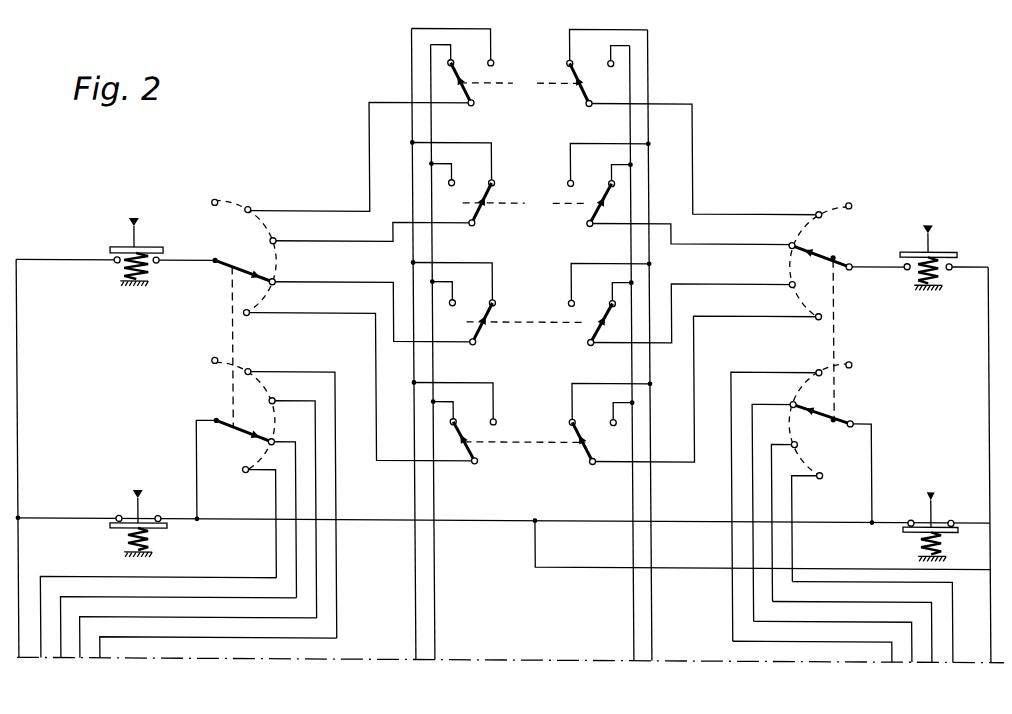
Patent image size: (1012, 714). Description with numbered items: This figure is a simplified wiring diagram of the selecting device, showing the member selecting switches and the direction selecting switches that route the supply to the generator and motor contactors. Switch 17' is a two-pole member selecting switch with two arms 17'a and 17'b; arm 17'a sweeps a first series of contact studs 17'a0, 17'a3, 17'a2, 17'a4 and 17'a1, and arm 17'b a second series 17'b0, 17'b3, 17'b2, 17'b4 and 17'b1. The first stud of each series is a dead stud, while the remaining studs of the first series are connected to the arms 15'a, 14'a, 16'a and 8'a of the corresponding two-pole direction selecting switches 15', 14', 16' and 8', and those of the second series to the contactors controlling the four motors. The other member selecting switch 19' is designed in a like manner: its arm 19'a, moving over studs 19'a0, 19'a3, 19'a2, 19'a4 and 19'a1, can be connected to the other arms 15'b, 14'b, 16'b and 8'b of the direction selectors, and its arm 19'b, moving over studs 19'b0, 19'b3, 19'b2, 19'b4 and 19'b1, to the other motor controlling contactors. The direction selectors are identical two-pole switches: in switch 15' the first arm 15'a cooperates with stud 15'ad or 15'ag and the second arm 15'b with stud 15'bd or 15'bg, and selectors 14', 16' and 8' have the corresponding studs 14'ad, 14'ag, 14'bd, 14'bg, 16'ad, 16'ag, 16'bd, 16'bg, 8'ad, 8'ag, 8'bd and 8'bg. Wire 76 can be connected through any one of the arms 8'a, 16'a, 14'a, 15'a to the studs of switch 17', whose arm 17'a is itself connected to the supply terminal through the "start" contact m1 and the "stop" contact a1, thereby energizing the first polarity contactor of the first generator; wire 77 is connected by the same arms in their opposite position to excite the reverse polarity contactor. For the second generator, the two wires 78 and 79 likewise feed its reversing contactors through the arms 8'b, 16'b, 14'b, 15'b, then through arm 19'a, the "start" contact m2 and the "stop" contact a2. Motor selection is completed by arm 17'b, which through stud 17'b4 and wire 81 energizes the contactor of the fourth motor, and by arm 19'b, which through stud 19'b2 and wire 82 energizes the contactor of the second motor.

The contact stud 15'ad is at (458, 55).
The contact stud 15'ag is at (470, 48).
The contact stud 15'bd is at (596, 48).
The contact stud 15'bg is at (606, 55).
The first arm of direction selecting switch 15'a is at (370, 137).
The second arm of direction selecting switch 15'b is at (694, 138).
The direction selecting switch 15' is at (521, 78).
The contact stud 14'ad is at (458, 173).
The contact stud 14'ag is at (469, 163).
The contact stud 14'bd is at (598, 164).
The contact stud 14'bg is at (608, 174).
The first arm of direction selecting switch 14'a is at (389, 212).
The second arm of direction selecting switch 14'b is at (680, 213).
The direction selecting switch 14' is at (523, 198).
The contact stud 16'ad is at (459, 292).
The contact stud 16'ag is at (471, 283).
The contact stud 16'bd is at (610, 284).
The contact stud 16'bg is at (627, 293).
The first arm of direction selecting switch 16'a is at (390, 313).
The second arm of direction selecting switch 16'b is at (689, 314).
The direction selecting switch 16' is at (526, 316).
The contact stud 8'ad is at (457, 412).
The contact stud 8'ag is at (469, 402).
The contact stud 8'bd is at (602, 403).
The contact stud 8'bg is at (612, 413).
The first arm of direction selecting switch 8'a is at (369, 388).
The second arm of direction selecting switch 8'b is at (696, 390).
The direction selecting switch 8' is at (524, 436).
The start contact m1 is at (115, 251).
The start contact m2 is at (920, 258).
The stop contact a1 is at (138, 523).
The stop contact a2 is at (930, 526).
The arm of member selecting switch 17'a is at (244, 256).
The dead stud 17'a0 is at (216, 194).
The contact stud 17'a1 is at (267, 307).
The contact stud 17'a2 is at (291, 234).
The contact stud 17'a3 is at (265, 203).
The contact stud 17'a4 is at (291, 275).
The member selecting switch 17' is at (243, 347).
The arm of member selecting switch 17'b is at (234, 441).
The dead stud 17'b0 is at (207, 355).
The contact stud 17'b1 is at (269, 518).
The contact stud 17'b2 is at (293, 502).
The contact stud 17'b3 is at (291, 497).
The contact stud 17'b4 is at (291, 512).
The arm of member selecting switch 19'a is at (820, 262).
The dead stud 19'a0 is at (859, 198).
The contact stud 19'a1 is at (796, 311).
The contact stud 19'a2 is at (782, 240).
The contact stud 19'a3 is at (812, 208).
The contact stud 19'a4 is at (776, 279).
The member selecting switch 19' is at (845, 340).
The arm of member selecting switch 19'b is at (832, 444).
The dead stud 19'b0 is at (867, 360).
The contact stud 19'b1 is at (802, 522).
The contact stud 19'b2 is at (775, 505).
The contact stud 19'b3 is at (778, 500).
The contact stud 19'b4 is at (779, 515).
The wire 76 is at (431, 613).
The wire 77 is at (412, 613).
The wire 78 is at (630, 613).
The wire 79 is at (648, 613).
The wire 81 is at (62, 638).
The wire 82 is at (913, 641).